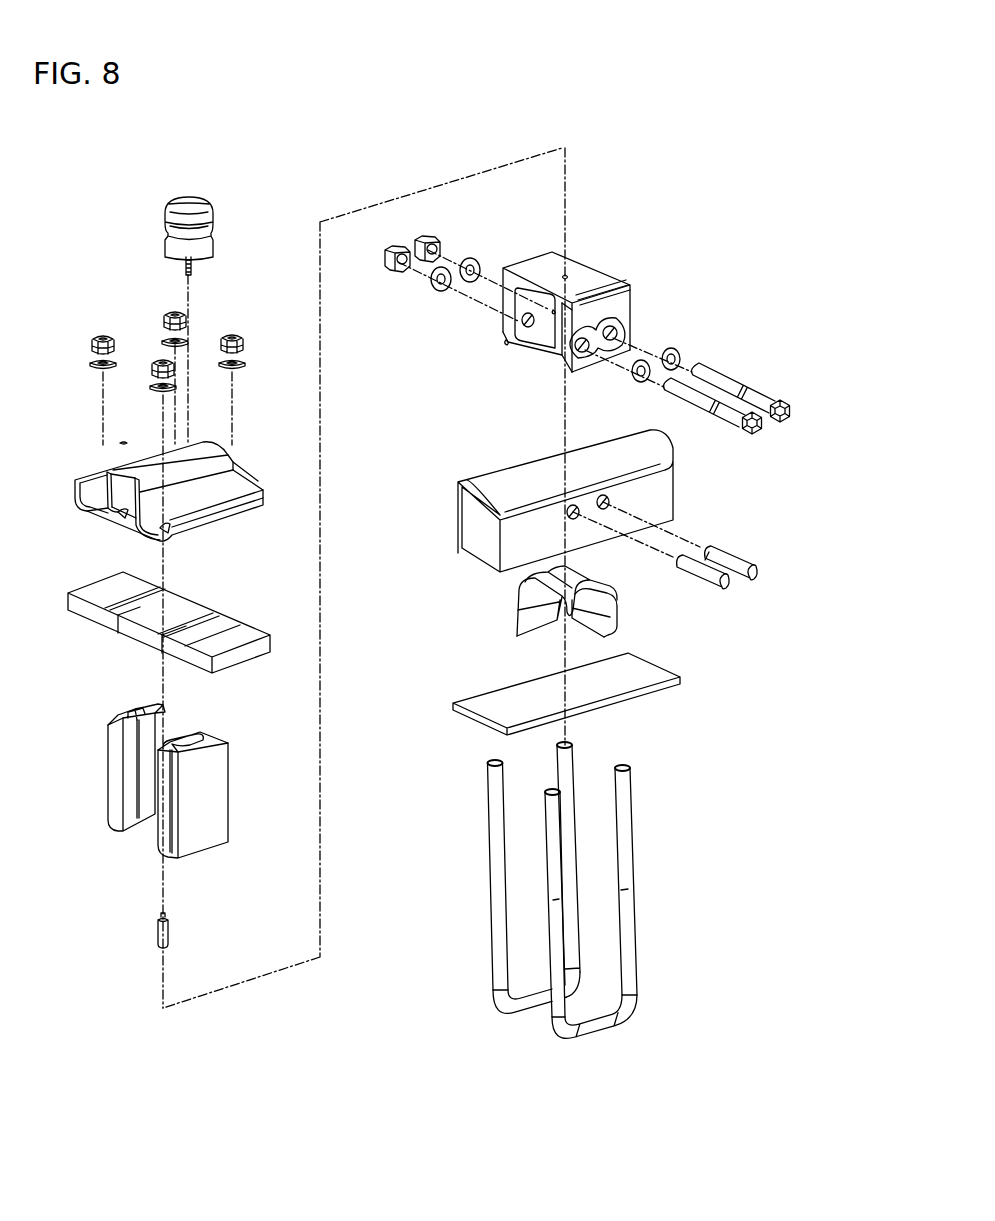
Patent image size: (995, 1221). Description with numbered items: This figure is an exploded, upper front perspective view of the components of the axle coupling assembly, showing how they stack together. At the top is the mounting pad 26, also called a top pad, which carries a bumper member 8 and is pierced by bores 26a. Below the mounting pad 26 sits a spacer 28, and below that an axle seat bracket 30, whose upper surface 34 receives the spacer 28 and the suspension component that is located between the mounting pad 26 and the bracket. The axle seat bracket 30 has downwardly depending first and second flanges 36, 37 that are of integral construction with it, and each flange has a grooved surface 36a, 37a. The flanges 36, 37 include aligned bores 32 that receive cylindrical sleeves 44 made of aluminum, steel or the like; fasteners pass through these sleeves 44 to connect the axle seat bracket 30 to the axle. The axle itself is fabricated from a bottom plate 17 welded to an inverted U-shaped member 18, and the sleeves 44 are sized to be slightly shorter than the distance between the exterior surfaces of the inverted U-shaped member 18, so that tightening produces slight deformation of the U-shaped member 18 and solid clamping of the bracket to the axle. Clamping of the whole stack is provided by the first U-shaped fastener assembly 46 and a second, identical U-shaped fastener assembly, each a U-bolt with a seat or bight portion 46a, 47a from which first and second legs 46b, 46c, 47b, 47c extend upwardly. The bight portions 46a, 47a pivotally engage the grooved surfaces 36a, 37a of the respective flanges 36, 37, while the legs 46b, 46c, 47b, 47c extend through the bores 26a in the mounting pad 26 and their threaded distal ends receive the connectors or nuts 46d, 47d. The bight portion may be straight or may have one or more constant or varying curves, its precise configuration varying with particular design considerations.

The bumper member 8 is at (185, 203).
The bottom plate 17 is at (478, 707).
The inverted U-shaped member 18 is at (458, 512).
The mounting pad 26 is at (138, 458).
The bores 26a is at (87, 508).
The spacer 28 is at (108, 770).
The axle seat bracket 30 is at (597, 253).
The aligned bores 32 is at (552, 307).
The upper surface 34 is at (596, 277).
The first flange 36 is at (562, 345).
The grooved surface 36a is at (572, 372).
The second flange 37 is at (503, 300).
The grooved surface 37a is at (508, 342).
The cylindrical sleeves 44 is at (703, 582).
The first U-shaped fastener assembly 46 is at (648, 960).
The bight portion 46a is at (607, 1022).
The first leg 46b is at (617, 793).
The second leg 46c is at (561, 833).
The connectors or nuts 46d is at (245, 348).
The bight portion 47a is at (537, 1010).
The first leg 47b is at (556, 763).
The second leg 47c is at (490, 843).
The connectors or nuts 47d is at (92, 346).